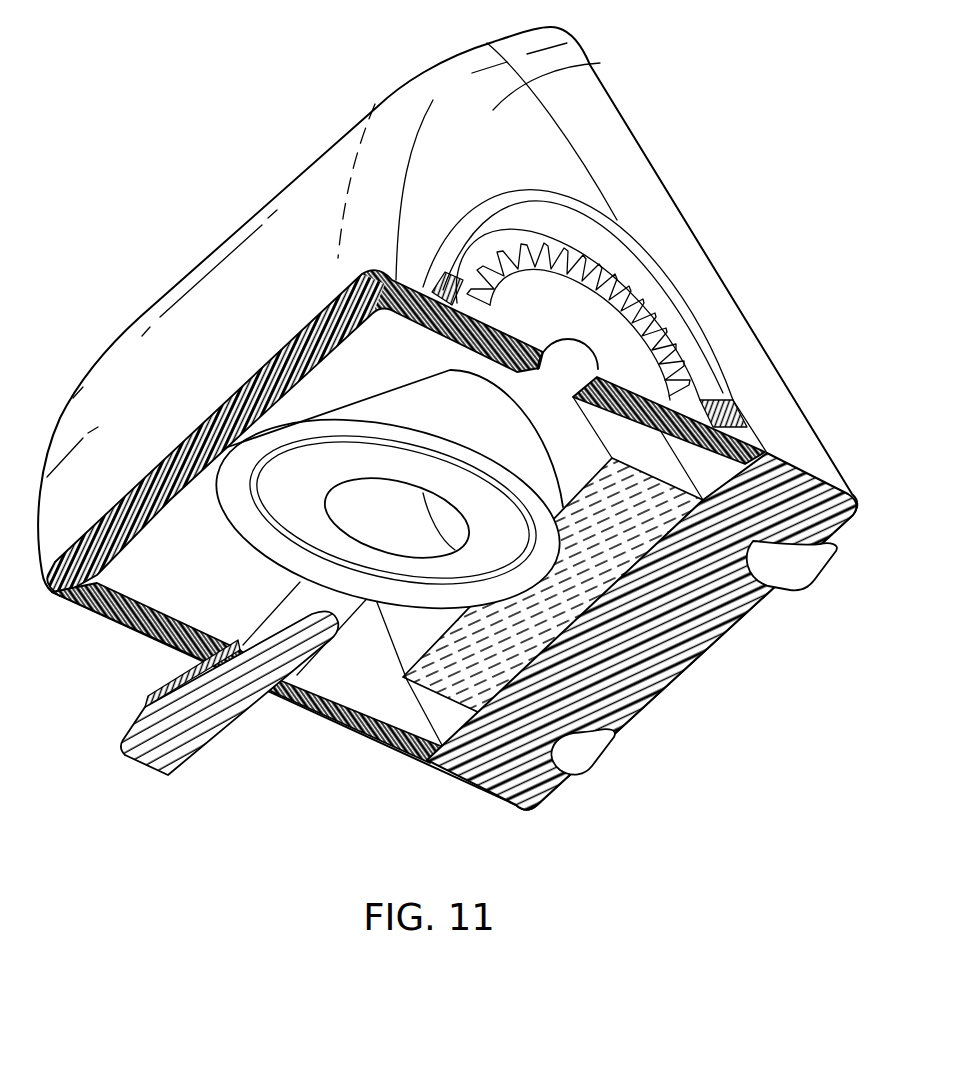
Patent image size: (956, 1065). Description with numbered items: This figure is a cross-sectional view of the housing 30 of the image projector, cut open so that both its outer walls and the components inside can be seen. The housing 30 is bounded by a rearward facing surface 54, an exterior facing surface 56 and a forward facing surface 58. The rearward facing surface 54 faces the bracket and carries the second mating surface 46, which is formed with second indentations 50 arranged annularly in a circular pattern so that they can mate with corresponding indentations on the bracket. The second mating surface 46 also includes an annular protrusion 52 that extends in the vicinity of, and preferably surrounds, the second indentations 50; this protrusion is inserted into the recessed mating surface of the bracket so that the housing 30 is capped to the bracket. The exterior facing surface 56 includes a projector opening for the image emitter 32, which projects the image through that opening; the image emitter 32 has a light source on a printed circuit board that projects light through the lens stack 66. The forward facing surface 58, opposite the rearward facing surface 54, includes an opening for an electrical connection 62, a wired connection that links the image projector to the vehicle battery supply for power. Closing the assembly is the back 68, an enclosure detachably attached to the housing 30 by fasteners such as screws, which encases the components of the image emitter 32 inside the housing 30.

The housing 30 is at (701, 61).
The image emitter 32 is at (407, 407).
The second mating surface 46 is at (490, 242).
The second indentations 50 is at (662, 318).
The annular protrusion 52 is at (640, 260).
The rearward facing surface 54 is at (600, 63).
The exterior facing surface 56 is at (197, 342).
The forward facing surface 58 is at (330, 727).
The electrical connection 62 is at (177, 733).
The lens stack 66 is at (270, 530).
The back 68 is at (668, 623).